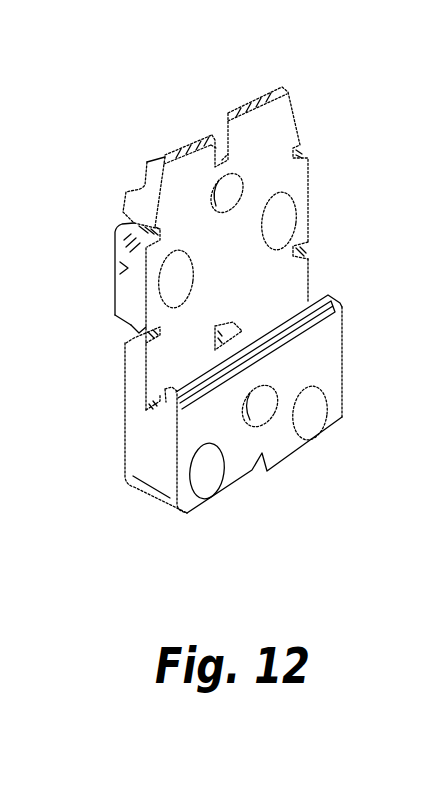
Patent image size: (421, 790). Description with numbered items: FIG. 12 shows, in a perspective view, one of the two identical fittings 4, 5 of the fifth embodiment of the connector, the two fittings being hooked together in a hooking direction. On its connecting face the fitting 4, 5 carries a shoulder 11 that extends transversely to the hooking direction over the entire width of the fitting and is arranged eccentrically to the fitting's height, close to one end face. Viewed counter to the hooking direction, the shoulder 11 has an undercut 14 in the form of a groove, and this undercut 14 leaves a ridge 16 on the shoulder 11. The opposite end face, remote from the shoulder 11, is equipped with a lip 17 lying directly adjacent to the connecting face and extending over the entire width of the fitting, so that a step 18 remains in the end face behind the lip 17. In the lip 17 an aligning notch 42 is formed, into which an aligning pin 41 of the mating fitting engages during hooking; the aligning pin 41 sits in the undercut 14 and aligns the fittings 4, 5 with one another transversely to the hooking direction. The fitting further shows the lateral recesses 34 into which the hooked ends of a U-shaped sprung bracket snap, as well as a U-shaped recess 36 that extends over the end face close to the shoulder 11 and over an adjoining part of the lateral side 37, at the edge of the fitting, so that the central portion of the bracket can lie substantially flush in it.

The fitting 4 is at (230, 306).
The fitting 5 is at (230, 306).
The shoulder 11 is at (330, 364).
The undercut 14 is at (150, 395).
The ridge 16 is at (338, 301).
The lip 17 is at (157, 157).
The step 18 is at (140, 185).
The lateral recesses 34 is at (130, 223).
The U-shaped recess 36 is at (310, 247).
The lateral side 37 is at (128, 268).
The aligning pin 41 is at (233, 336).
The aligning notch 42 is at (217, 120).